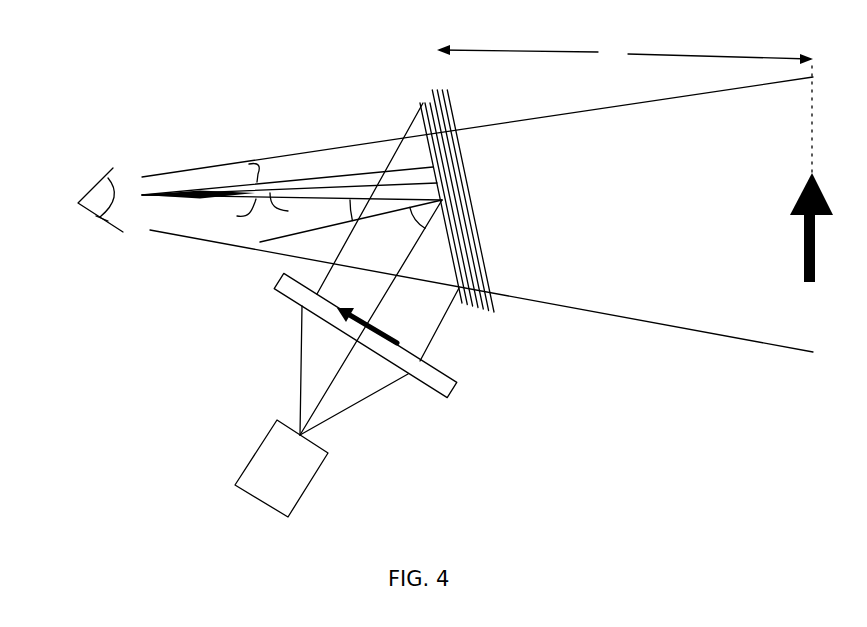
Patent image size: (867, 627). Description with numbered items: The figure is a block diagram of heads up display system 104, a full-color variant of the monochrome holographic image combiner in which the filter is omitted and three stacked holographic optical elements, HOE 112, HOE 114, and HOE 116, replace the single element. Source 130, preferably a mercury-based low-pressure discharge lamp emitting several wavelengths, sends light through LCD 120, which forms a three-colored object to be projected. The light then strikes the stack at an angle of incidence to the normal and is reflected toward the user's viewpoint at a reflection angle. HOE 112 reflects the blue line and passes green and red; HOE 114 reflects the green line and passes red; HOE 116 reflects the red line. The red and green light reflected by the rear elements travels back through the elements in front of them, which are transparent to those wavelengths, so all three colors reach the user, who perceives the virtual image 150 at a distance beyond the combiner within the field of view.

The heads up display system 104 is at (166, 110).
The holographic optical element 112 is at (420, 112).
The holographic optical element 114 is at (423, 97).
The holographic optical element 116 is at (480, 227).
The liquid crystal display 120 is at (456, 389).
The source 130 is at (307, 492).
The image 150 is at (802, 238).